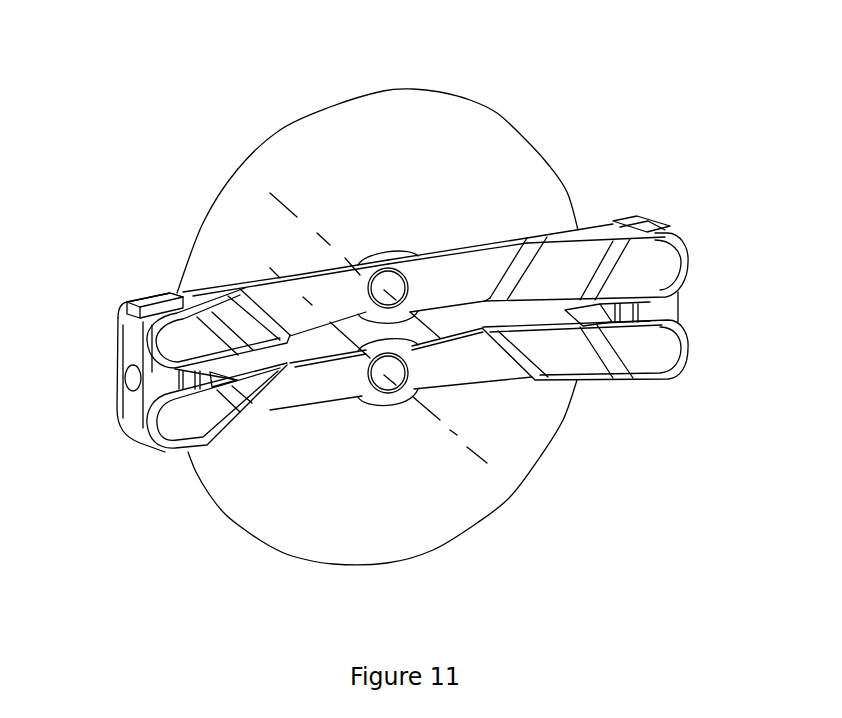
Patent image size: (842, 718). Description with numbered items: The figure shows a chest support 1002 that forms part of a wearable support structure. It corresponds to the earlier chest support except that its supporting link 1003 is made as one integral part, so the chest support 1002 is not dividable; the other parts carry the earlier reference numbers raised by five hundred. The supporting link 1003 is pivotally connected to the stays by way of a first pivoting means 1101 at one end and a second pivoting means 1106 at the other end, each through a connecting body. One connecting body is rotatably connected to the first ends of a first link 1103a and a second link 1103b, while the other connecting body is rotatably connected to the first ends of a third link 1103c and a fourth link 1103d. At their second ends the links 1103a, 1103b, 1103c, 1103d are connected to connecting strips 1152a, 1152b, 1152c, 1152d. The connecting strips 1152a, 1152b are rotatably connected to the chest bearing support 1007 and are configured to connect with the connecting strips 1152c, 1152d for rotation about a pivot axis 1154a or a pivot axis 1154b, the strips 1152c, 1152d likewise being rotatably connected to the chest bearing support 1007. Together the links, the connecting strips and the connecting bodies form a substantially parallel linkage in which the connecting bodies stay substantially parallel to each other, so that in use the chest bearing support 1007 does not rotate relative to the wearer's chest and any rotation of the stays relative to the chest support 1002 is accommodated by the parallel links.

The chest support 1002 is at (556, 90).
The supporting link 1003 is at (245, 133).
The chest bearing support 1007 is at (295, 546).
The first pivoting means 1101 is at (110, 441).
The second pivoting means 1106 is at (692, 312).
The link 1103a is at (175, 289).
The link 1103b is at (178, 442).
The link 1103c is at (662, 255).
The link 1103d is at (665, 365).
The connecting strip 1152a is at (260, 281).
The connecting strip 1152b is at (297, 395).
The connecting strip 1152c is at (458, 267).
The connecting strip 1152d is at (467, 368).
The pivot axis 1154a is at (298, 222).
The pivot axis 1154b is at (433, 413).